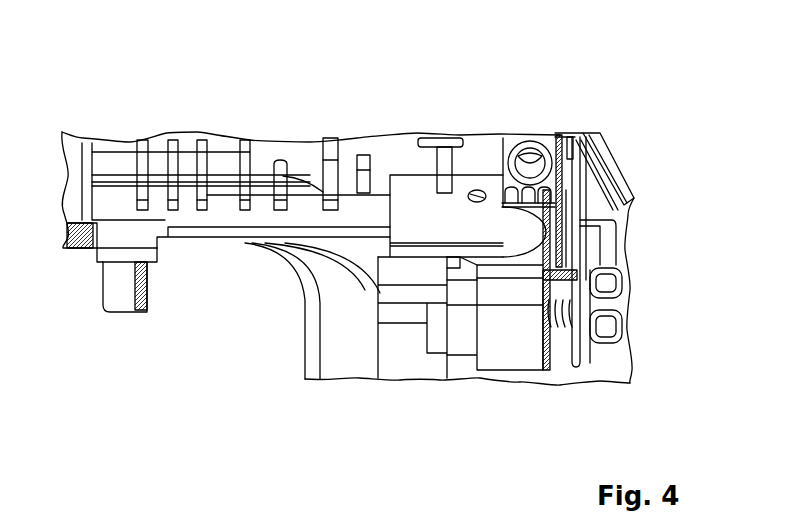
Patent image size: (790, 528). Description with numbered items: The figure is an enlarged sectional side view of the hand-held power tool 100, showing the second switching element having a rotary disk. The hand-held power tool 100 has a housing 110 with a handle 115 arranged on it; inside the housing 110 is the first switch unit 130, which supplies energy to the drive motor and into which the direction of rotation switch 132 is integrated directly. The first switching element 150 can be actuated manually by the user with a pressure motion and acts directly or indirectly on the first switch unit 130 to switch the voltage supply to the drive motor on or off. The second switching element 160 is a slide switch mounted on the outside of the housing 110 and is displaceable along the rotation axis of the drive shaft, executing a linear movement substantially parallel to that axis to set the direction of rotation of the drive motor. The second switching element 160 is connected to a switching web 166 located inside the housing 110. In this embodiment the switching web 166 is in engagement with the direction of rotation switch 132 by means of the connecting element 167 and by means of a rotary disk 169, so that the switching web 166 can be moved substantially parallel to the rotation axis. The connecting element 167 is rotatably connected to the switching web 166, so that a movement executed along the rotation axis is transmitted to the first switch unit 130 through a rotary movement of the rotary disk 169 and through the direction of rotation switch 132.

The hand-held power tool 100 is at (299, 87).
The housing 110 is at (564, 130).
The handle 115 is at (626, 365).
The first switch unit 130 is at (467, 351).
The direction of rotation switch 132 is at (518, 353).
The first switching element 150 is at (348, 360).
The second switching element 160 is at (130, 303).
The switching web 166 is at (212, 233).
The connecting element 167 is at (476, 190).
The rotary disk 169 is at (545, 228).